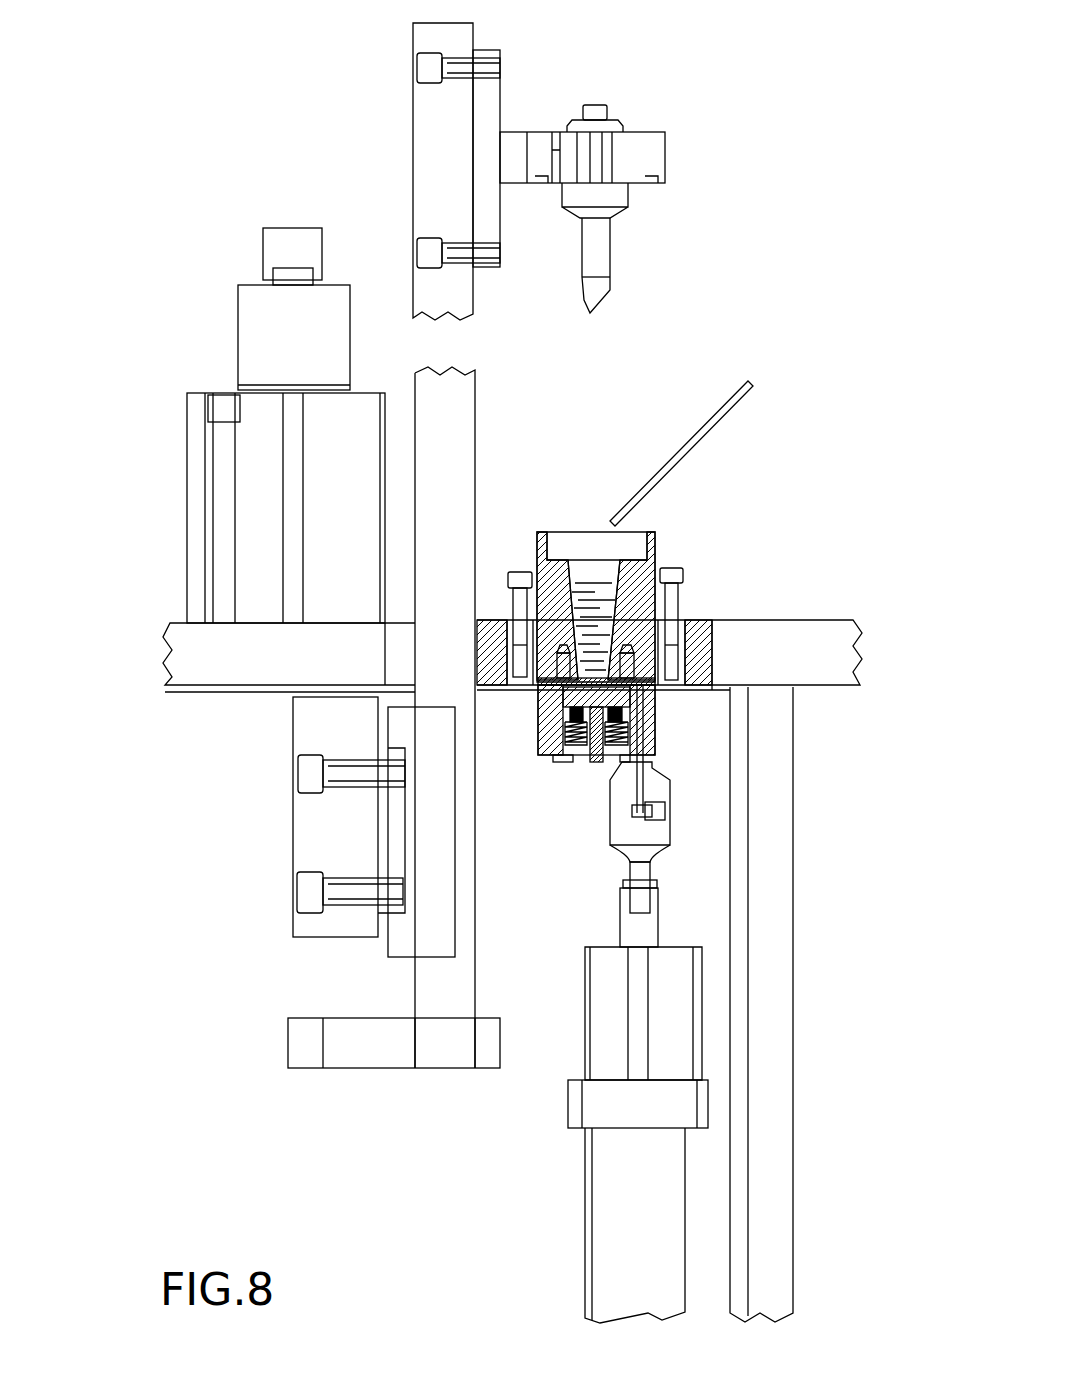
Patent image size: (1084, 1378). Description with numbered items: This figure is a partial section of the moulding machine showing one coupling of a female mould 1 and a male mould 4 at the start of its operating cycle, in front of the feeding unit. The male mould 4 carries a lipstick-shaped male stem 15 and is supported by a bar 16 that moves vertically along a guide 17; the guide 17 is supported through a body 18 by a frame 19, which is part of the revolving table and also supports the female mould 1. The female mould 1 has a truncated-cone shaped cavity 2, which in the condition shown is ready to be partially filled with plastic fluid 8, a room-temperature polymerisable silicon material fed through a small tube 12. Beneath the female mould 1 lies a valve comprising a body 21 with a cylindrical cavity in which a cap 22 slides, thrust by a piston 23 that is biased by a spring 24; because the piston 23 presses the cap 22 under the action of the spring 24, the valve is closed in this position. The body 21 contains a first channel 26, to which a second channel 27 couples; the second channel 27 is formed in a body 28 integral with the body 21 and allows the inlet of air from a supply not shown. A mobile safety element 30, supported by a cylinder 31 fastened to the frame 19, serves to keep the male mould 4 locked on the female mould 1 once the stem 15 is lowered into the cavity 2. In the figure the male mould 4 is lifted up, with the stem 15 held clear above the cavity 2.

The female mould 1 is at (680, 541).
The truncated-cone shaped cavity 2 is at (597, 572).
The male mould 4 is at (657, 111).
The plastic fluid 8 is at (684, 574).
The small tube 12 is at (740, 403).
The male stem 15 is at (605, 242).
The bar 16 is at (430, 140).
The guide 17 is at (440, 830).
The body 18 is at (325, 833).
The frame 19 is at (792, 647).
The valve body 21 is at (540, 720).
The cap 22 is at (630, 694).
The piston 23 is at (657, 725).
The spring 24 is at (580, 750).
The first channel 26 is at (632, 760).
The second channel 27 is at (647, 768).
The body 28 is at (647, 832).
The mobile safety element 30 is at (290, 250).
The cylinder 31 is at (262, 507).